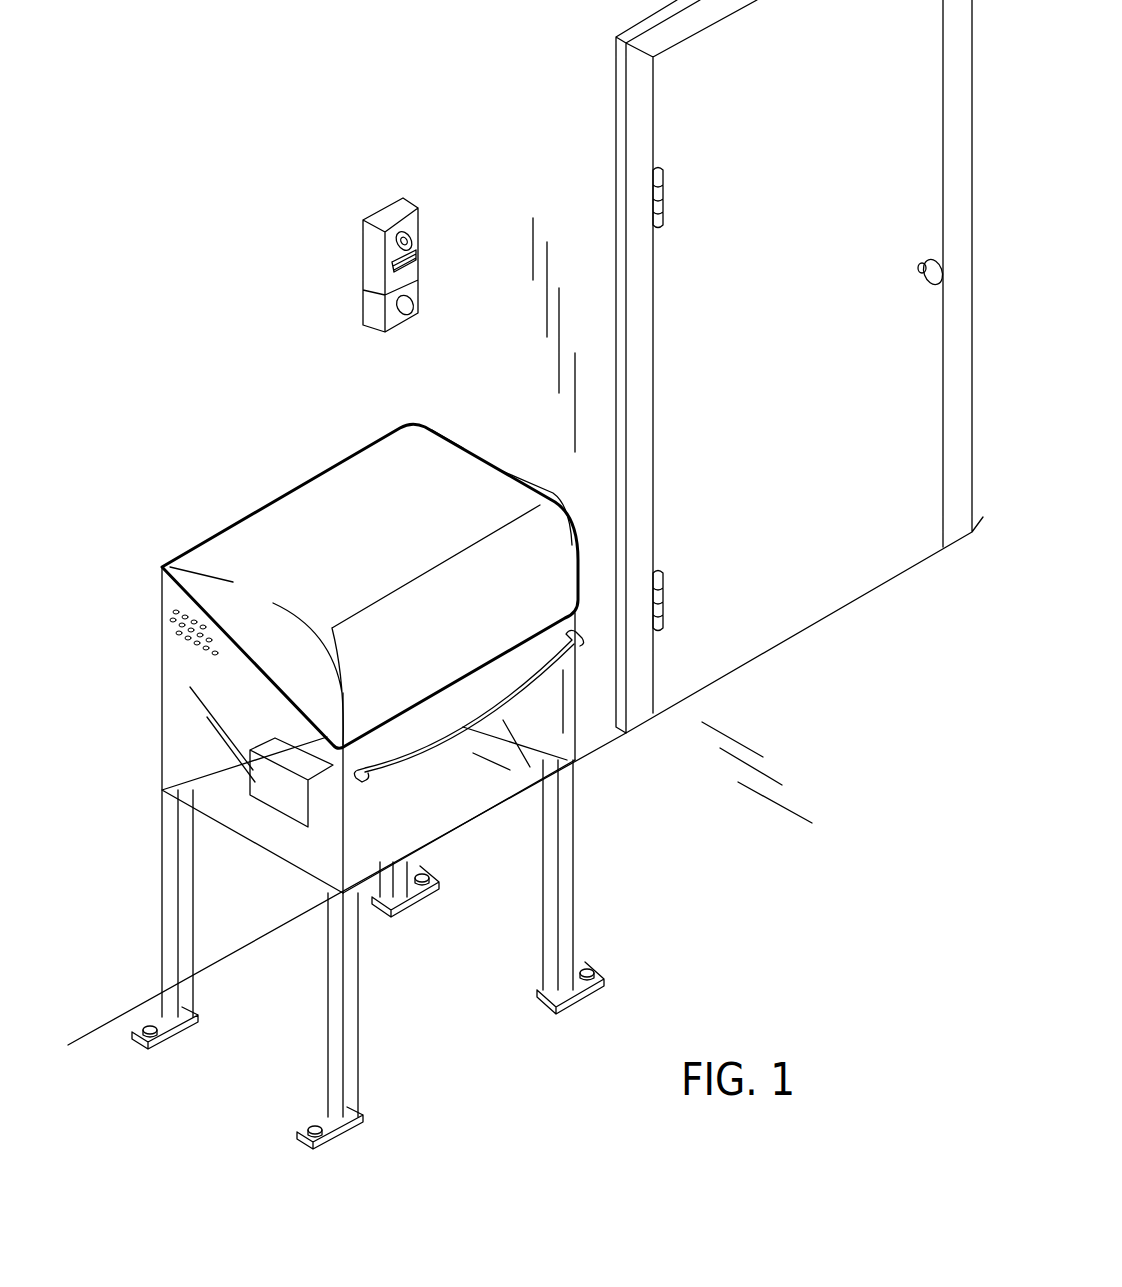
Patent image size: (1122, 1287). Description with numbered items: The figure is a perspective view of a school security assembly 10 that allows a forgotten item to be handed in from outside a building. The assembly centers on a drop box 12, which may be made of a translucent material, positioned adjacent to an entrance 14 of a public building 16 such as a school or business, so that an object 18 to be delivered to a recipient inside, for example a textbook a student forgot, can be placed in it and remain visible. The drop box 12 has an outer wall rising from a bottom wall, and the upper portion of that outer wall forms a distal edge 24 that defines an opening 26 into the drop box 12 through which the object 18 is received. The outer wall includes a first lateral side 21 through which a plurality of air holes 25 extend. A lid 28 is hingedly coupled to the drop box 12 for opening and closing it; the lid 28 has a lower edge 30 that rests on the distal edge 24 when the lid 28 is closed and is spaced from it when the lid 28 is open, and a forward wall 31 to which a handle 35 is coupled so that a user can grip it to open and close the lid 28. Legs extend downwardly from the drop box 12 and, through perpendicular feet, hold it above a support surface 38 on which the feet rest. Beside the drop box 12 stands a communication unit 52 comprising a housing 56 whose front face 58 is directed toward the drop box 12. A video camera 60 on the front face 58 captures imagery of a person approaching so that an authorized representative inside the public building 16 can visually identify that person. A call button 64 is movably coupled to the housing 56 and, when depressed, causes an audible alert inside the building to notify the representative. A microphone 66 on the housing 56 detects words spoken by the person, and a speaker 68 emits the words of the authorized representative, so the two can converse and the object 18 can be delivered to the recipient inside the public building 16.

The school security assembly 10 is at (140, 460).
The drop box 12 is at (160, 617).
The entrance 14 is at (812, 560).
The public building 16 is at (600, 670).
The object 18 is at (255, 770).
The first lateral side 21 is at (188, 732).
The distal edge 24 is at (208, 630).
The air holes 25 is at (180, 652).
The opening 26 is at (259, 665).
The lid 28 is at (498, 452).
The lower edge 30 is at (317, 750).
The forward wall 31 is at (542, 610).
The handle 35 is at (472, 728).
The support surface 38 is at (107, 1046).
The communication unit 52 is at (402, 158).
The housing 56 is at (383, 217).
The front face 58 is at (410, 275).
The video camera 60 is at (413, 237).
The call button 64 is at (408, 312).
The microphone 66 is at (393, 263).
The speaker 68 is at (413, 253).